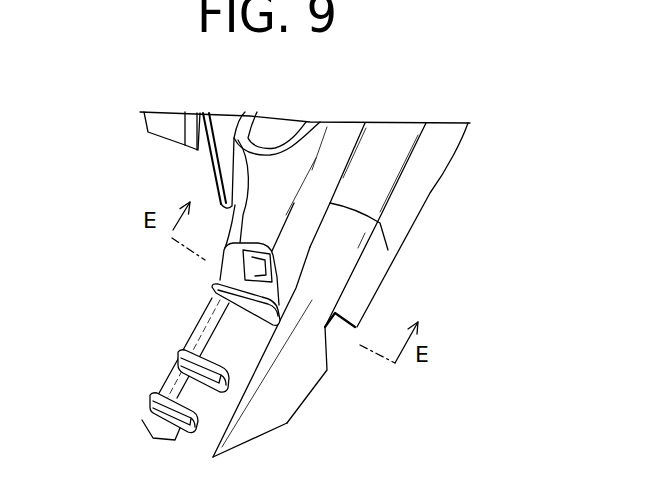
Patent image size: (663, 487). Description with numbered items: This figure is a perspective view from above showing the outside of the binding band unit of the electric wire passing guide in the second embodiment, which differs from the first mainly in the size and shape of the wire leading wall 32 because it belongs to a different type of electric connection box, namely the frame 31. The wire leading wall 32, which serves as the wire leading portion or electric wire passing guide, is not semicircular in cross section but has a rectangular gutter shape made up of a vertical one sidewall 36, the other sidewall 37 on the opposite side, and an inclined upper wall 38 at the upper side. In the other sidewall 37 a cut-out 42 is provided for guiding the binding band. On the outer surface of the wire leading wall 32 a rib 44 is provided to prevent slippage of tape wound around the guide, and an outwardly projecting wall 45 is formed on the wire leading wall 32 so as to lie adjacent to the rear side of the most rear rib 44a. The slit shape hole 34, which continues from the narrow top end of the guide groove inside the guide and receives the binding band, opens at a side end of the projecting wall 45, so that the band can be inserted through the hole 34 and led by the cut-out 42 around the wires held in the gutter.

The frame 31 is at (462, 144).
The wire leading wall 32 is at (313, 407).
The slit shape hole 34 is at (273, 277).
The one sidewall 36 is at (142, 431).
The other sidewall 37 is at (268, 417).
The upper wall 38 is at (213, 335).
The cut-out 42 is at (333, 345).
The rib 44 is at (178, 358).
The most rear rib 44a is at (215, 288).
The outwardly projecting wall 45 is at (217, 255).